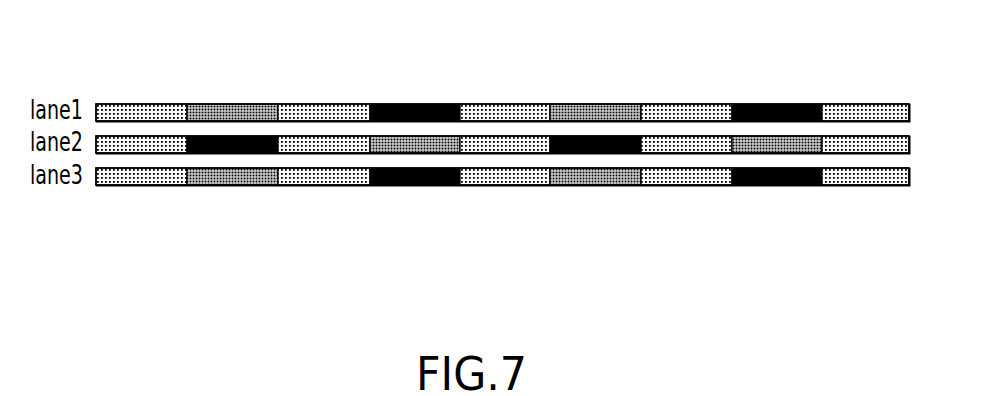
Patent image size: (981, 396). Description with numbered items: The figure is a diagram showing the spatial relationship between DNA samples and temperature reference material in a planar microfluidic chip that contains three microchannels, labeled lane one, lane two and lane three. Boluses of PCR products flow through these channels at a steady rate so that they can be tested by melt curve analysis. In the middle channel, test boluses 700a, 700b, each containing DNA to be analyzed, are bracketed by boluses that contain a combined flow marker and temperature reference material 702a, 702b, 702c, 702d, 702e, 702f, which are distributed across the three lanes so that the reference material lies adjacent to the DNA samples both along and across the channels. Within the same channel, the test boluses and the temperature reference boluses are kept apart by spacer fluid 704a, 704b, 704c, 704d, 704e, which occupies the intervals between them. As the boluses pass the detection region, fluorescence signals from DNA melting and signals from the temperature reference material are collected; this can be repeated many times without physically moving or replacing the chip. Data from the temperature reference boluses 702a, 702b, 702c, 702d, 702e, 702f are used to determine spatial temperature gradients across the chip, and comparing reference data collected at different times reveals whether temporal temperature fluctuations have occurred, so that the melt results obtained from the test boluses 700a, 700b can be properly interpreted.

The test bolus 700a is at (377, 140).
The test bolus 700b is at (817, 138).
The combined flow marker and temperature reference material bolus 702a is at (277, 153).
The combined flow marker and temperature reference material bolus 702b is at (410, 104).
The combined flow marker and temperature reference material bolus 702c is at (423, 186).
The combined flow marker and temperature reference material bolus 702d is at (553, 153).
The combined flow marker and temperature reference material bolus 702e is at (763, 104).
The combined flow marker and temperature reference material bolus 702f is at (787, 186).
The spacer fluid 704a is at (152, 140).
The spacer fluid 704b is at (345, 152).
The spacer fluid 704c is at (492, 140).
The spacer fluid 704d is at (690, 140).
The spacer fluid 704e is at (880, 140).